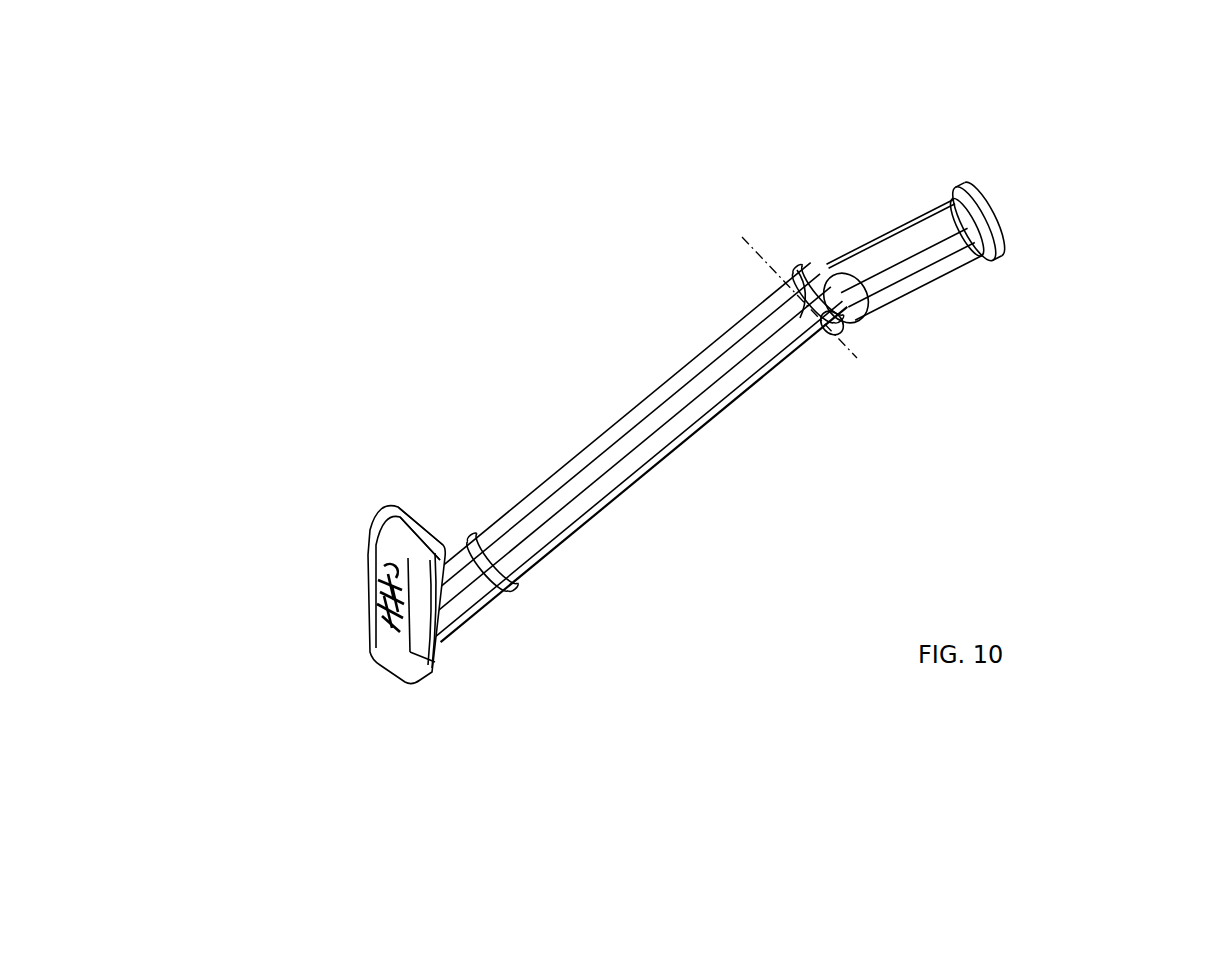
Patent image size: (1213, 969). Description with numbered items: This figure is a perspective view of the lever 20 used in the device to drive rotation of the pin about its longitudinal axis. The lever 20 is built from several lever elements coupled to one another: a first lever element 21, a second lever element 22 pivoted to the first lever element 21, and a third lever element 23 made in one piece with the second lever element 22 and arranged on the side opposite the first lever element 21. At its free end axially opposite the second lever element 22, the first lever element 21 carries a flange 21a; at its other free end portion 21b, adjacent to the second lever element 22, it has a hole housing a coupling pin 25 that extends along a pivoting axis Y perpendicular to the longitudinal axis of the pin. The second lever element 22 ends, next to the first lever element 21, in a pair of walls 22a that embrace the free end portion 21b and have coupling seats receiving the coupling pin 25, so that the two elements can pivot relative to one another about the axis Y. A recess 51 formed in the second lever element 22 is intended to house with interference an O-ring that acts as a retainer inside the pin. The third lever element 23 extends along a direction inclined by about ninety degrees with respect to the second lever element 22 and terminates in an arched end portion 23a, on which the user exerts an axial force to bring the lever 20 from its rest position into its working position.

The lever 20 is at (545, 354).
The first lever element 21 is at (915, 270).
The flange 21a is at (995, 258).
The free end portion 21b is at (802, 293).
The second lever element 22 is at (622, 477).
The pair of walls 22a is at (803, 272).
The third lever element 23 is at (383, 650).
The arched end portion 23a is at (385, 520).
The coupling pin 25 is at (828, 336).
The recess 51 is at (496, 598).
The pivoting axis Y is at (808, 314).